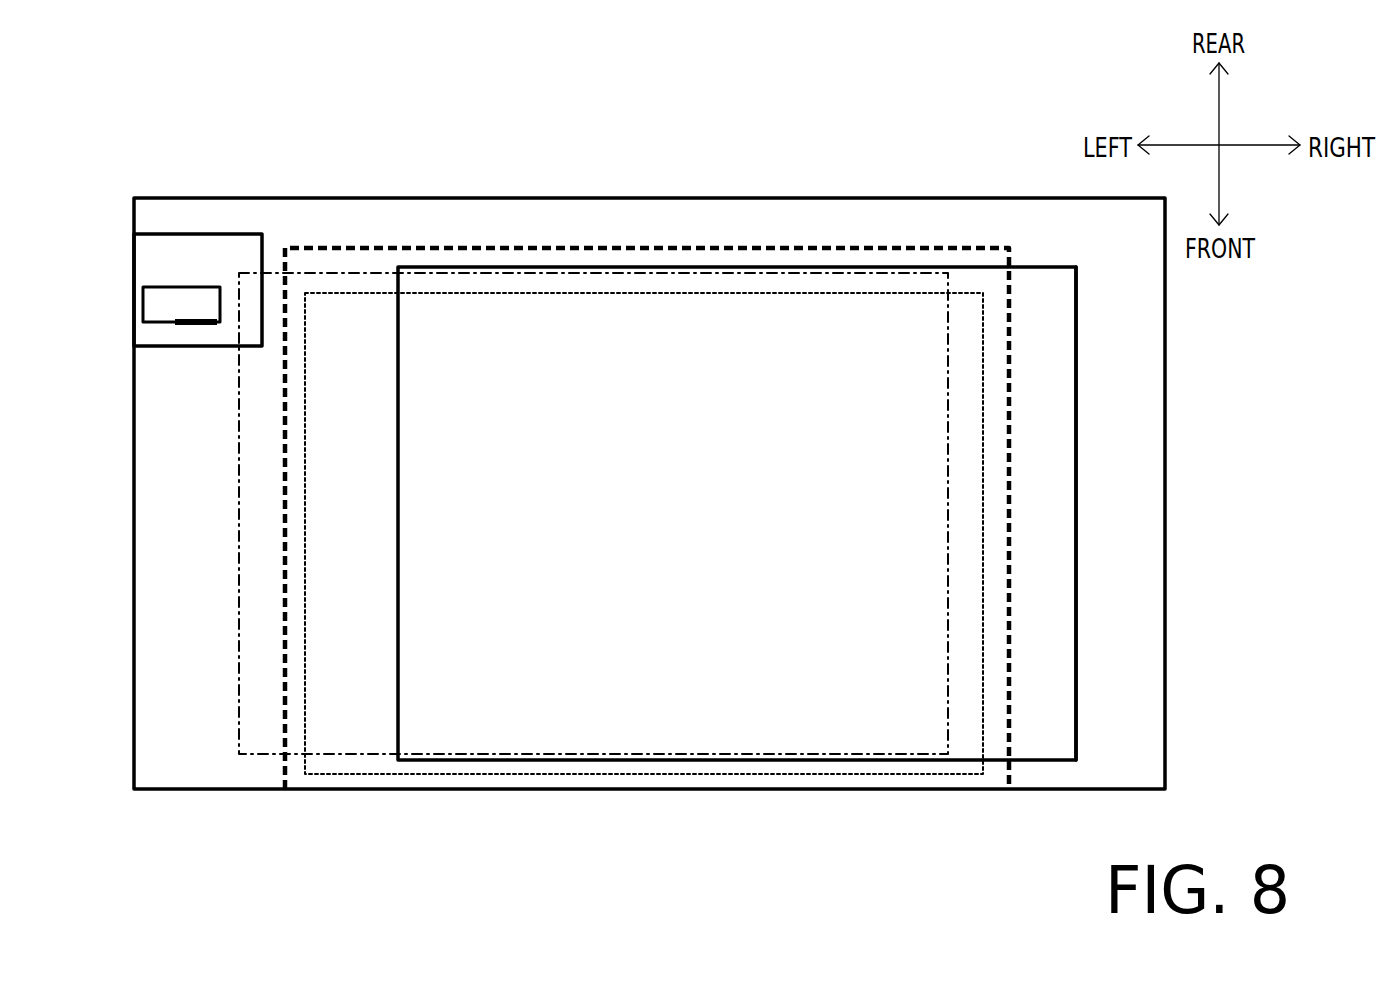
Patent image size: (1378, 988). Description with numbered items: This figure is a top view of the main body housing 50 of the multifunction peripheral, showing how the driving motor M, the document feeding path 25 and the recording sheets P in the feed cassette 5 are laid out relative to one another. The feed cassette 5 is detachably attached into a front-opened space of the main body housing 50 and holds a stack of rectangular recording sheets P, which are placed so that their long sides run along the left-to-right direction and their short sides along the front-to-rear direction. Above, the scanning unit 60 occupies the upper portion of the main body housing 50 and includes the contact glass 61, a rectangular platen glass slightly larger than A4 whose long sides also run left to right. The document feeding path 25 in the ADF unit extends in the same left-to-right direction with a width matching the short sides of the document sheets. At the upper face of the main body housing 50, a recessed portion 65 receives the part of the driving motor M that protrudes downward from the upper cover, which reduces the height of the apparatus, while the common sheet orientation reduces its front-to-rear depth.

The feed cassette 5 is at (790, 248).
The document feeding path 25 is at (378, 263).
The main body housing 50 is at (1130, 733).
The scanning unit 60 is at (1027, 288).
The contact glass 61 is at (1067, 320).
The recessed portion 65 is at (178, 272).
The driving motor M is at (155, 305).
The recording sheet P is at (303, 443).